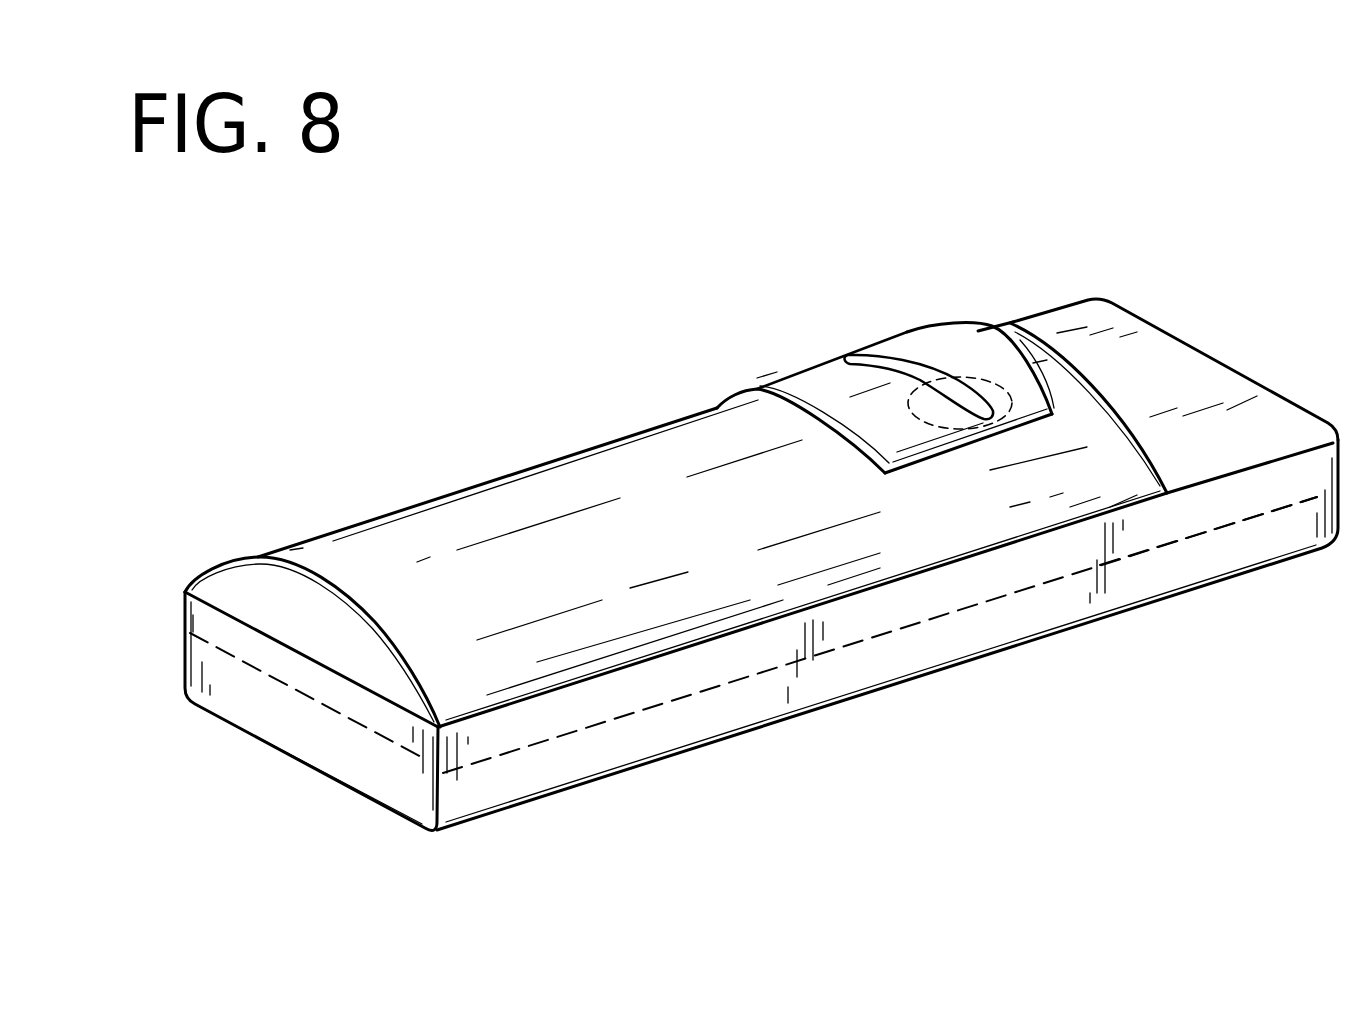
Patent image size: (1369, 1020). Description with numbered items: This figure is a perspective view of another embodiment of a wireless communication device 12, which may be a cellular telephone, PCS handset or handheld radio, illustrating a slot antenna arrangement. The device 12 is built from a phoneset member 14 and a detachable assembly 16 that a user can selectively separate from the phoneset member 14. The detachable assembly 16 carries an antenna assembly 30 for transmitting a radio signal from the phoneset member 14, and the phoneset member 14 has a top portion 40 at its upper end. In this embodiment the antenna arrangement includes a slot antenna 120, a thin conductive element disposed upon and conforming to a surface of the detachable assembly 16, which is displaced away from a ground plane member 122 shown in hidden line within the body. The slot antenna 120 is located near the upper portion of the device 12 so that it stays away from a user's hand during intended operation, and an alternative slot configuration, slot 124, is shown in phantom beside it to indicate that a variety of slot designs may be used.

The wireless communication device 12 is at (712, 225).
The phoneset member 14 is at (683, 720).
The detachable assembly 16 is at (578, 481).
The antenna assembly 30 is at (817, 384).
The top portion 40 is at (1163, 370).
The slot antenna 120 is at (917, 377).
The ground plane member 122 is at (1187, 537).
The slot 124 is at (993, 380).